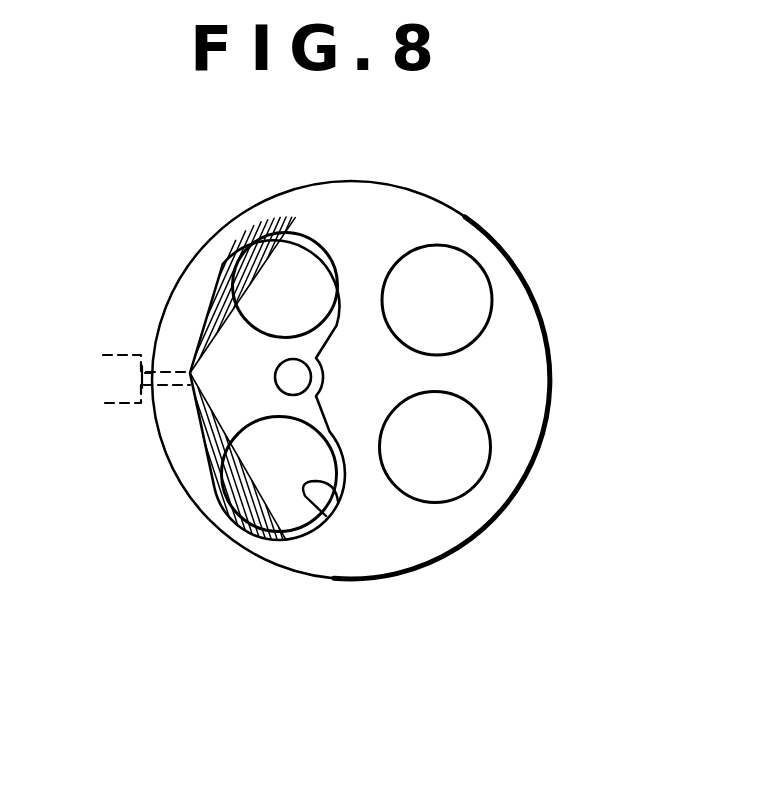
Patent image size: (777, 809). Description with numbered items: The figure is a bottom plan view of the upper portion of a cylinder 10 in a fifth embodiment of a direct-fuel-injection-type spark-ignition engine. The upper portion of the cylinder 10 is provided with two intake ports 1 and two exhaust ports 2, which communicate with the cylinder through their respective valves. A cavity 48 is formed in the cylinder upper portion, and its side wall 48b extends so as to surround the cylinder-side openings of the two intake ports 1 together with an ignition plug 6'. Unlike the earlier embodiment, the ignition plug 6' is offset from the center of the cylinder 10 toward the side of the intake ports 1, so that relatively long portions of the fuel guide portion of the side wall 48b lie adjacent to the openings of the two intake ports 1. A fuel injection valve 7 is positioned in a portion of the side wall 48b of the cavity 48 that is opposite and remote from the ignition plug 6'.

The intake ports 1 is at (322, 266).
The exhaust ports 2 is at (470, 287).
The ignition plug 6' is at (451, 360).
The fuel injection valve 7 is at (120, 353).
The cylinder 10 is at (531, 284).
The cavity 48 is at (235, 403).
The side wall of the cavity 48b is at (338, 502).